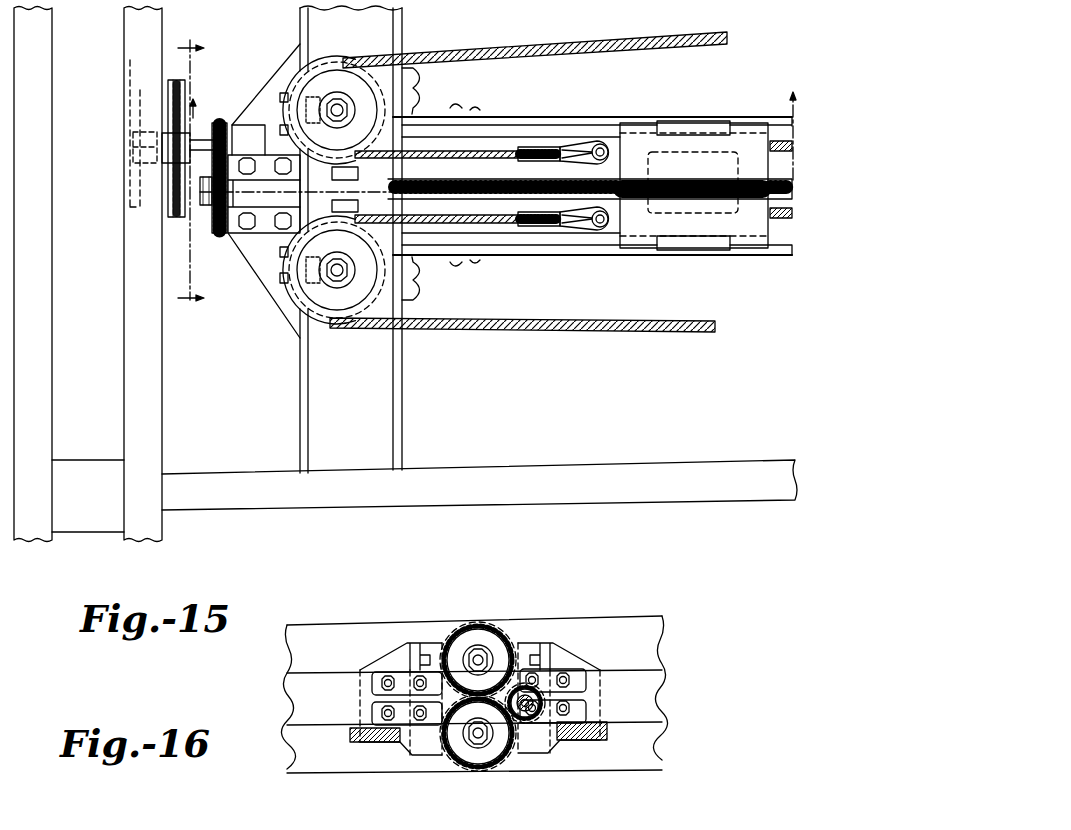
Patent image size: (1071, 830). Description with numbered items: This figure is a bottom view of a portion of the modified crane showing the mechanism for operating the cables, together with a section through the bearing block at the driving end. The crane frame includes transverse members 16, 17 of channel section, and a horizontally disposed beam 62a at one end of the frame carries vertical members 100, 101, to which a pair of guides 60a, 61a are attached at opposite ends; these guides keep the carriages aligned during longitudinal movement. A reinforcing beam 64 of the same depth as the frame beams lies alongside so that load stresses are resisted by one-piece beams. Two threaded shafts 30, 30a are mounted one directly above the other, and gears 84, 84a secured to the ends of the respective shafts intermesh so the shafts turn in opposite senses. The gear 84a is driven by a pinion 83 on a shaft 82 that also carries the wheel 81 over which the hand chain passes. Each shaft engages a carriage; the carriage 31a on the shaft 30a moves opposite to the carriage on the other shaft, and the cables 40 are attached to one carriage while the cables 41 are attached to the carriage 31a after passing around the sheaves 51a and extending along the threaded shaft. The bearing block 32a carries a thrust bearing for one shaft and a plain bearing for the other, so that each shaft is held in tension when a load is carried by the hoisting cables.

In FIG. 15, the transverse member 16 is at (52, 306).
In FIG. 15, the transverse member 17 is at (493, 127).
In FIG. 15, the wheel 81 is at (170, 96).
In FIG. 15, the pinion 83 is at (220, 122).
In FIG. 15, the horizontally disposed beam 62a is at (404, 401).
In FIG. 16, the horizontally disposed beam 62a is at (634, 656).
In FIG. 15, the sheaves 51a is at (363, 72).
In FIG. 16, the sheaves 51a is at (373, 747).
In FIG. 15, the cables 41 is at (616, 42).
In FIG. 15, the guide 60a is at (560, 117).
In FIG. 15, the guide 61a is at (545, 258).
In FIG. 15, the threaded shaft 30a is at (487, 186).
In FIG. 16, the threaded shaft 30a is at (480, 744).
In FIG. 15, the carriage 31a is at (693, 228).
In FIG. 15, the cables 40 is at (782, 140).
In FIG. 15, the vertical member 100 is at (456, 118).
In FIG. 15, the vertical member 101 is at (440, 278).
In FIG. 15, the reinforcing beam 64 is at (580, 467).
In FIG. 16, the bearing block 32a is at (423, 658).
In FIG. 16, the threaded shaft 30 is at (477, 655).
In FIG. 16, the gear 84 is at (510, 634).
In FIG. 16, the gear 84a is at (498, 774).
In FIG. 16, the shaft 82 is at (530, 721).